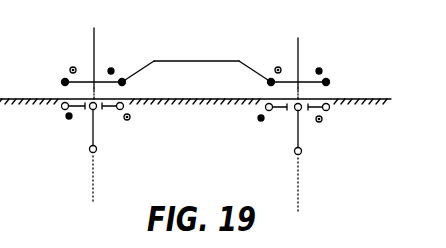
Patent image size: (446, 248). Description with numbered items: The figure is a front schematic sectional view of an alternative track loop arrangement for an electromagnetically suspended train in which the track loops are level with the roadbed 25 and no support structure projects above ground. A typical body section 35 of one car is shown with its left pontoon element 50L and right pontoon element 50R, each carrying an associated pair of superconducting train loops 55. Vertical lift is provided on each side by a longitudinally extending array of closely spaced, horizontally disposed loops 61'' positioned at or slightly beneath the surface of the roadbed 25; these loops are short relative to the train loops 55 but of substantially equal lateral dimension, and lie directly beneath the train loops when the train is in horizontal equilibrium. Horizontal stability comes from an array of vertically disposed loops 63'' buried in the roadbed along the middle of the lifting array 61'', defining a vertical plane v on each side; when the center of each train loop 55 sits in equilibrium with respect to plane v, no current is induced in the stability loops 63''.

The roadbed 25 is at (206, 129).
The vertical plane v is at (94, 33).
The superconducting loops 55 is at (97, 79).
The right pontoon element 50R is at (142, 63).
The body section 35 is at (200, 62).
The left pontoon element 50L is at (245, 63).
The horizontally disposed loops 61'' is at (205, 128).
The vertically disposed loops 63'' is at (196, 157).